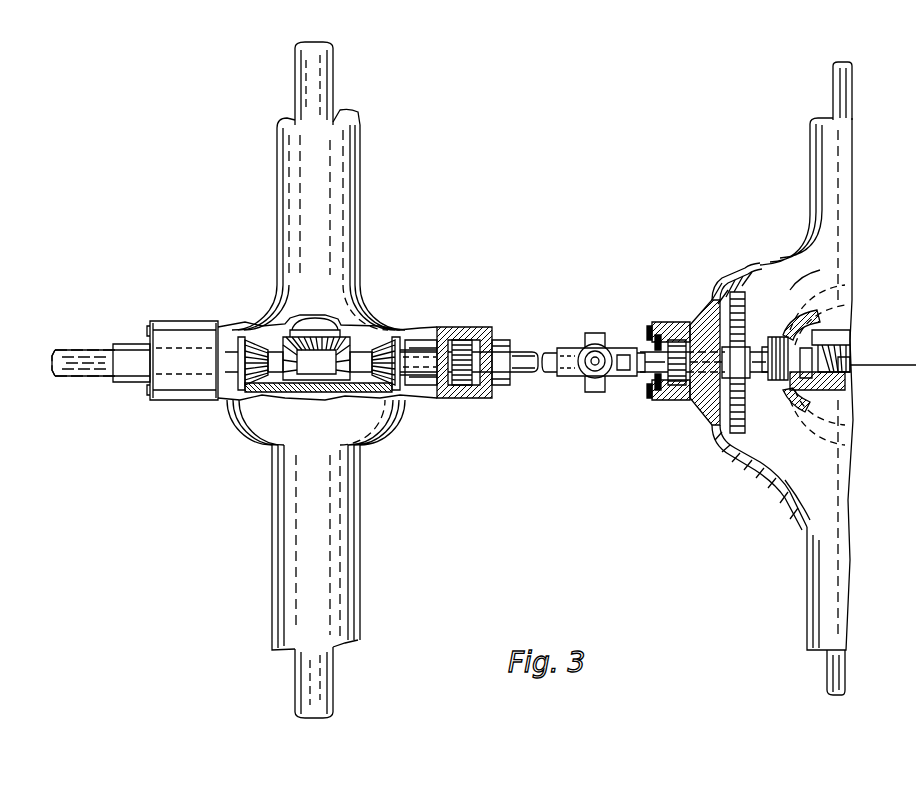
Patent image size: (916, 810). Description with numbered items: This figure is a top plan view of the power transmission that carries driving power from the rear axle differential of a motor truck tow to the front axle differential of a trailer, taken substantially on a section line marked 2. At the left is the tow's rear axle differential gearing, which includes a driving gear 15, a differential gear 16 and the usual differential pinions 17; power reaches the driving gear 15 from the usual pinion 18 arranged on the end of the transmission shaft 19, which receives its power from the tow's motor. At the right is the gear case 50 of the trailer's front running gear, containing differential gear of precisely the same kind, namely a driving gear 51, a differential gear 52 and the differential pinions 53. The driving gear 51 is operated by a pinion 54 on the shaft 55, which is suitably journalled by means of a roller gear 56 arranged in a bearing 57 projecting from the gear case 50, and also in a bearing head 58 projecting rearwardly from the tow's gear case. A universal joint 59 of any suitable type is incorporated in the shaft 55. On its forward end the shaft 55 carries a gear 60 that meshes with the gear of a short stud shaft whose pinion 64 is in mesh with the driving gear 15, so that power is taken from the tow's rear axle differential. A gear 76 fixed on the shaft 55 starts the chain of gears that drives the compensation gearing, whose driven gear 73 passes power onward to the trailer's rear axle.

The section line 2- 2 is at (36, 362).
The driving gear 15 is at (270, 385).
The differential gear 16 is at (338, 336).
The differential pinions 17 is at (255, 335).
The pinion 18 is at (248, 340).
The transmission shaft 19 is at (70, 351).
The gear case 50 is at (835, 268).
The driving gear 51 is at (850, 386).
The differential gear 52 is at (850, 345).
The differential pinions 53 is at (838, 320).
The pinion 54 is at (760, 432).
The shaft 55 is at (712, 362).
The roller gear 56 is at (652, 347).
The bearing 57 is at (682, 325).
The bearing head 58 is at (490, 394).
The universal joint 59 is at (599, 392).
The gear 60 is at (470, 330).
The pinion 64 is at (398, 386).
The driven gear 73 is at (788, 390).
The gear 76 is at (745, 318).